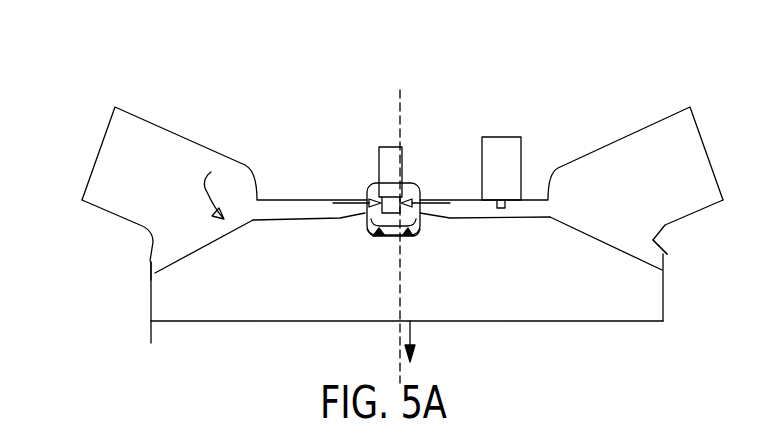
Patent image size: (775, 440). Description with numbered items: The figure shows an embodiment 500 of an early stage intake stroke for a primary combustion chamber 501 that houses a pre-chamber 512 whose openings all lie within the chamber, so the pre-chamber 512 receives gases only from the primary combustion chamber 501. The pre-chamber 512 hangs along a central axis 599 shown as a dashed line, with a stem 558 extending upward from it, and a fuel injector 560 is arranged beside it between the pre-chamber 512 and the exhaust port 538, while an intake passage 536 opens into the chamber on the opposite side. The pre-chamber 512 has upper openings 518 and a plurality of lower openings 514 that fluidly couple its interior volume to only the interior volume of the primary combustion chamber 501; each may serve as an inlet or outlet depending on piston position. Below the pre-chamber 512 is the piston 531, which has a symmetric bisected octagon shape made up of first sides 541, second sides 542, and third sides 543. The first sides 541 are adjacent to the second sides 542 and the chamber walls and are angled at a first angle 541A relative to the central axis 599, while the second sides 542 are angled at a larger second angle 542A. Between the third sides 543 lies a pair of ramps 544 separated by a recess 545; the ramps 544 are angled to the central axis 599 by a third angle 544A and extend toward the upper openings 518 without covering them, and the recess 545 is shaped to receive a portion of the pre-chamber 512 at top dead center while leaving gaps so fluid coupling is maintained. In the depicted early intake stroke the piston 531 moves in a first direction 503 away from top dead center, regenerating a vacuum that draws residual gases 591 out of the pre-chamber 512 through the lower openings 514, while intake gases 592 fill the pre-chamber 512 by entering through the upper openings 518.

The embodiment of an early stage intake stroke 500 is at (663, 79).
The primary combustion chamber 501 is at (195, 253).
The first direction 503 is at (410, 336).
The pre-chamber 512 is at (366, 182).
The lower openings 514 is at (411, 240).
The upper openings 518 is at (419, 188).
The piston 531 is at (487, 313).
The intake passage 536 is at (160, 183).
The exhaust port 538 is at (677, 185).
The first sides 541 is at (156, 297).
The first angle 541A is at (150, 272).
The second sides 542 is at (235, 233).
The second angle 542A is at (657, 266).
The third sides 543 is at (308, 220).
The ramps 544 is at (362, 236).
The third angle 544A is at (367, 192).
The recess 545 is at (393, 237).
The valve stem 558 is at (387, 147).
The fuel injector 560 is at (507, 137).
The residual gases 591 is at (373, 237).
The intake gases 592 is at (223, 193).
The central axis 599 is at (401, 128).